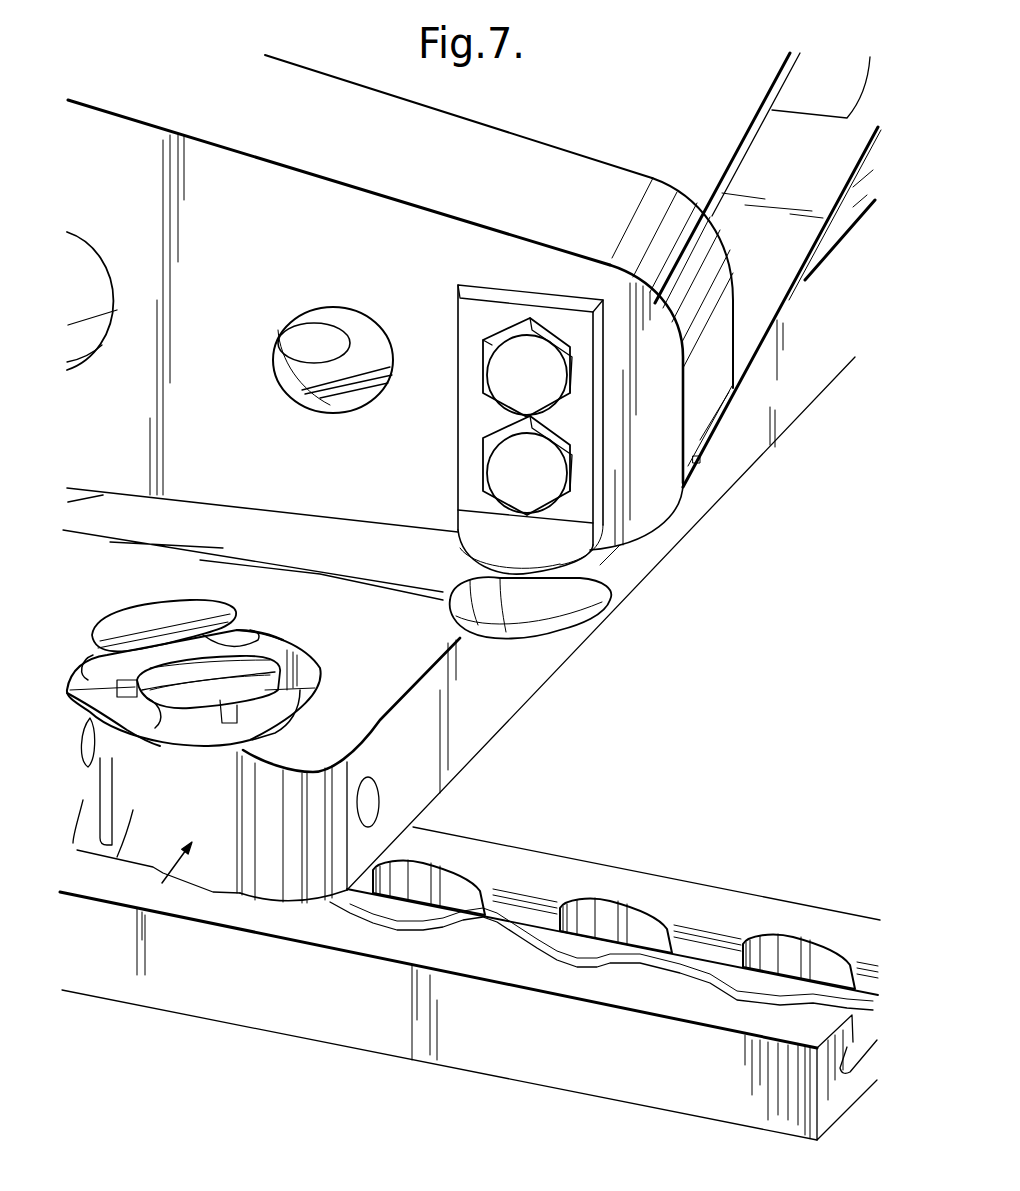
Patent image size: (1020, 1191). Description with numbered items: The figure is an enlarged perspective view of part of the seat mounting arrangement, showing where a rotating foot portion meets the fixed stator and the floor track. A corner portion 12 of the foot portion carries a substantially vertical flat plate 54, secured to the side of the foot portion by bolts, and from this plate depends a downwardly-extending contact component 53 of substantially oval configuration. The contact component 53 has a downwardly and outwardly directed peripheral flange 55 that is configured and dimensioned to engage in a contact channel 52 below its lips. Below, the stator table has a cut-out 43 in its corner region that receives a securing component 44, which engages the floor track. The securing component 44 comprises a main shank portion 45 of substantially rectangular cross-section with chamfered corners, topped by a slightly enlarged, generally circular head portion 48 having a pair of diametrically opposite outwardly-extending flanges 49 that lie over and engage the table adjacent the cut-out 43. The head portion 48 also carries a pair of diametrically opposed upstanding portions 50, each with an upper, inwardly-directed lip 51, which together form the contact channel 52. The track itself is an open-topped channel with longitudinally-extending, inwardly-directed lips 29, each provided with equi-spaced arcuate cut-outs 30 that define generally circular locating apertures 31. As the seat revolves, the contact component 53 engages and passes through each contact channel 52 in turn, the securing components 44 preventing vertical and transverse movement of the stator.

The corner portion 12 is at (653, 467).
The lip 29 is at (530, 903).
The arcuate cut-out 30 is at (620, 907).
The locating aperture 31 is at (768, 982).
The cut-out 43 is at (310, 657).
The securing component 44 is at (168, 878).
The main shank portion 45 is at (120, 852).
The head portion 48 is at (186, 746).
The flange 49 is at (88, 655).
The upstanding portion 50 is at (163, 604).
The lip 51 is at (250, 647).
The contact channel 52 is at (112, 698).
The contact component 53 is at (643, 577).
The flat plate 54 is at (478, 410).
The peripheral flange 55 is at (536, 635).